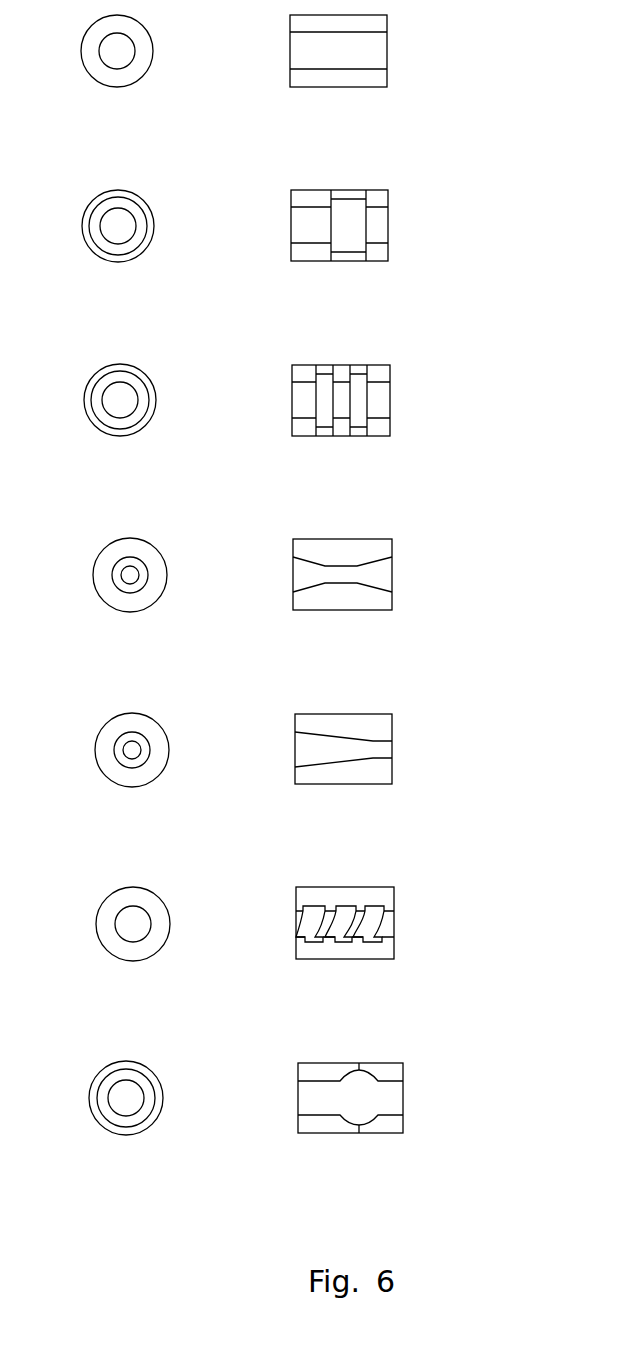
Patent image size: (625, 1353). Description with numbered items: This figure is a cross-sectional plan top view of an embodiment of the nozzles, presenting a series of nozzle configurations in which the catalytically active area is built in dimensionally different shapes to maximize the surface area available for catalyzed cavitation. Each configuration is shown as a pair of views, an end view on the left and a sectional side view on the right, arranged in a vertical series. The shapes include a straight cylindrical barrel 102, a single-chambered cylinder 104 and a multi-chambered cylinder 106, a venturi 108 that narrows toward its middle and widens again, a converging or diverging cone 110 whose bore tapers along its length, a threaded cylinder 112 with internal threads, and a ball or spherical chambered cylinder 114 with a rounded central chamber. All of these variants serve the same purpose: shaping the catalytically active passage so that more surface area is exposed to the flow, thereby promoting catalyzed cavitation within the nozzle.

The straight cylindrical barrel 102 is at (387, 50).
The single-chambered cylinder 104 is at (388, 224).
The multi-chambered cylinder 106 is at (390, 400).
The venturi 108 is at (392, 575).
The converging or diverging cone 110 is at (392, 751).
The threaded cylinder 112 is at (394, 920).
The ball or spherical chambered cylinder 114 is at (403, 1103).